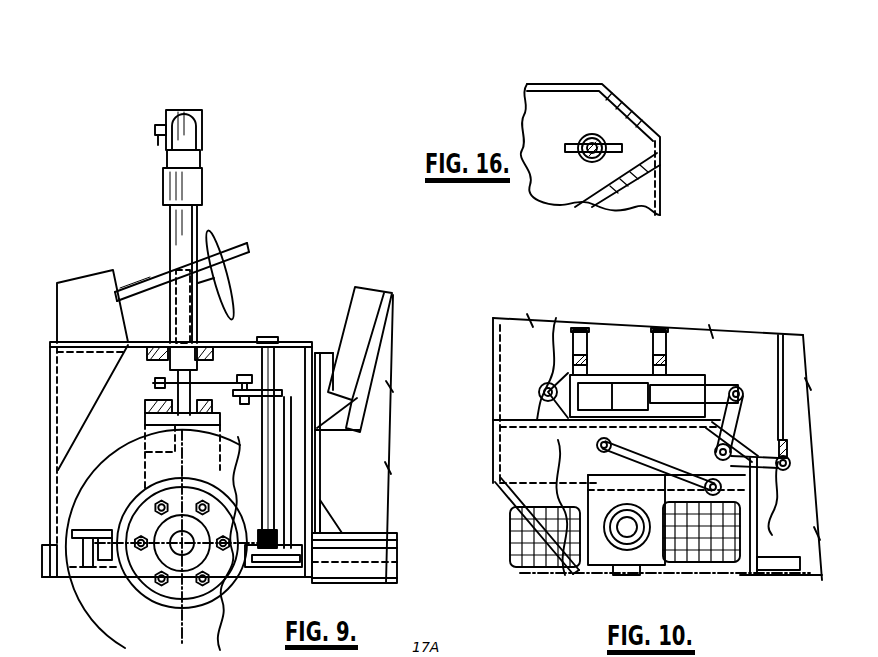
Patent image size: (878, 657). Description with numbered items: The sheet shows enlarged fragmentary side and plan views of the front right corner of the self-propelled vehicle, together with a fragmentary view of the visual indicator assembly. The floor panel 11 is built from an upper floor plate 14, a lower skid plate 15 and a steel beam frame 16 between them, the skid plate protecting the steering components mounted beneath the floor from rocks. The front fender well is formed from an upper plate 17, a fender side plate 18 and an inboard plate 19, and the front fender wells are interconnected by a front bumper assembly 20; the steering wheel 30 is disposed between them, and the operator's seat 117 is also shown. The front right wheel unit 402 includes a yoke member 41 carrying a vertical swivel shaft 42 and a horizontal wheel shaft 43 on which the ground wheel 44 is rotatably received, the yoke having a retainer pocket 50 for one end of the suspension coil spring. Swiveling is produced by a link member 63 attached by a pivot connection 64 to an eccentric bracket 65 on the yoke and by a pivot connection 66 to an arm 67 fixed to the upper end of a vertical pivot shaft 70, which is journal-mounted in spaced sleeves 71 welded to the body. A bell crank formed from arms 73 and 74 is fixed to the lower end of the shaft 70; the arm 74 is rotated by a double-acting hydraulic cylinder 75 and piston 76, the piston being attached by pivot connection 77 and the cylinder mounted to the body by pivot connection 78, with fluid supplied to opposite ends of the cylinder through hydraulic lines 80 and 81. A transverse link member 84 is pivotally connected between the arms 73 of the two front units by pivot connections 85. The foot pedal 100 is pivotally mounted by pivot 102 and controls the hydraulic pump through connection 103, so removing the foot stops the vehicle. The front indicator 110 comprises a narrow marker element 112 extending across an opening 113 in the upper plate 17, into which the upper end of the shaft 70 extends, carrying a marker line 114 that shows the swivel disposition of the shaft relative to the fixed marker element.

In FIG. 9, the floor panel 11 is at (378, 533).
In FIG. 9, the upper floor plate 14 is at (384, 540).
In FIG. 9, the lower skid plate 15 is at (380, 583).
In FIG. 9, the steel beam frame 16 is at (390, 562).
In FIG. 9, the upper plate 17 is at (140, 293).
In FIG. 16, the upper plate 17 is at (548, 108).
In FIG. 9, the fender side plate 18 is at (315, 360).
In FIG. 9, the inboard plate 19 is at (72, 483).
In FIG. 10, the inboard plate 19 is at (520, 420).
In FIG. 9, the front bumper assembly 20 is at (50, 512).
In FIG. 10, the front bumper assembly 20 is at (493, 392).
In FIG. 9, the steering wheel 30 is at (130, 290).
In FIG. 9, the yoke member 41 is at (152, 428).
In FIG. 10, the yoke member 41 is at (688, 540).
In FIG. 10, the vertical swivel shaft 42 is at (626, 532).
In FIG. 9, the horizontal wheel shaft 43 is at (183, 548).
In FIG. 10, the ground wheel 44 is at (542, 555).
In FIG. 9, the retainer pocket 50 is at (148, 358).
In FIG. 9, the link member 63 is at (224, 382).
In FIG. 10, the link member 63 is at (686, 470).
In FIG. 10, the pivot connection 64 is at (590, 443).
In FIG. 9, the eccentric bracket 65 is at (148, 402).
In FIG. 10, the eccentric bracket 65 is at (597, 463).
In FIG. 10, the pivot connection 66 is at (790, 510).
In FIG. 9, the arm 67 is at (278, 390).
In FIG. 10, the arm 67 is at (767, 492).
In FIG. 9, the vertical pivot shaft 70 is at (268, 468).
In FIG. 16, the vertical pivot shaft 70 is at (596, 137).
In FIG. 10, the vertical pivot shaft 70 is at (755, 452).
In FIG. 9, the sleeve 71 is at (232, 437).
In FIG. 10, the bell crank arm 73 is at (765, 453).
In FIG. 10, the bell crank arm 74 is at (740, 420).
In FIG. 10, the double-acting hydraulic cylinder 75 is at (621, 375).
In FIG. 10, the piston 76 is at (707, 390).
In FIG. 10, the pivot connection 77 is at (738, 392).
In FIG. 10, the pivot connection 78 is at (540, 388).
In FIG. 10, the hydraulic line 80 is at (664, 350).
In FIG. 10, the hydraulic line 81 is at (578, 342).
In FIG. 10, the transverse link member 84 is at (783, 367).
In FIG. 10, the pivot connection 85 is at (793, 460).
In FIG. 9, the foot pedal 100 is at (92, 530).
In FIG. 9, the pivot 102 is at (82, 556).
In FIG. 9, the connection 103 is at (98, 563).
In FIG. 9, the front indicator 110 is at (268, 338).
In FIG. 16, the front indicator 110 is at (582, 135).
In FIG. 16, the marker element 112 is at (570, 146).
In FIG. 16, the opening 113 is at (600, 158).
In FIG. 16, the marker line 114 is at (625, 140).
In FIG. 9, the operator's seat 117 is at (380, 330).
In FIG. 9, the wheel 402 is at (112, 600).
In FIG. 10, the wheel 402 is at (650, 577).